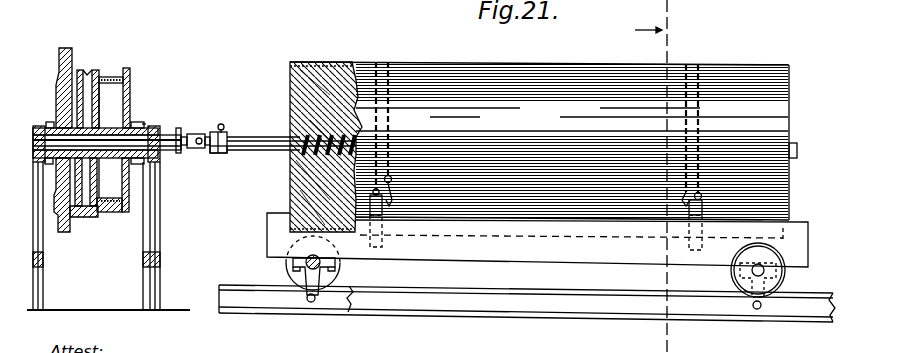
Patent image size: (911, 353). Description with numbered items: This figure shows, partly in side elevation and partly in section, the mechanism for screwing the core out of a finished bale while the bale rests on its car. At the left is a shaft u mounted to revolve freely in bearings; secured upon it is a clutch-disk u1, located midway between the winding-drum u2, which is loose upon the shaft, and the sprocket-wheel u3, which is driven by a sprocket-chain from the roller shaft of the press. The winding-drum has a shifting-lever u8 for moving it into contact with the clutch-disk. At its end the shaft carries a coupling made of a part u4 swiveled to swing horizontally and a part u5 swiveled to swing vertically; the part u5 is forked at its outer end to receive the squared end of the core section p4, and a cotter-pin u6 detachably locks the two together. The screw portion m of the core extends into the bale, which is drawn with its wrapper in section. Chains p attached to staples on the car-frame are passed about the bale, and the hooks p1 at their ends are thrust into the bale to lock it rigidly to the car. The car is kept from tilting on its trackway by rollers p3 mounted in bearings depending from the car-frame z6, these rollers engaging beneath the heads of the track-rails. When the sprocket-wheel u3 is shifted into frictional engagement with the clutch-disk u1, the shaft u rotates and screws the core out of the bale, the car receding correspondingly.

The shaft u is at (53, 123).
The clutch-disk u1 is at (85, 69).
The winding-drum u2 is at (128, 90).
The sprocket-wheel u3 is at (63, 47).
The coupling part u4 is at (192, 133).
The coupling part u5 is at (226, 131).
The cotter-pin u6 is at (223, 123).
The shifting-lever u8 is at (138, 122).
The screw shaft m is at (300, 143).
The chains p is at (378, 60).
The hooks p1 is at (391, 206).
The rollers p3 is at (311, 301).
The core section p4 is at (228, 150).
The carriage frame z6 is at (537, 240).